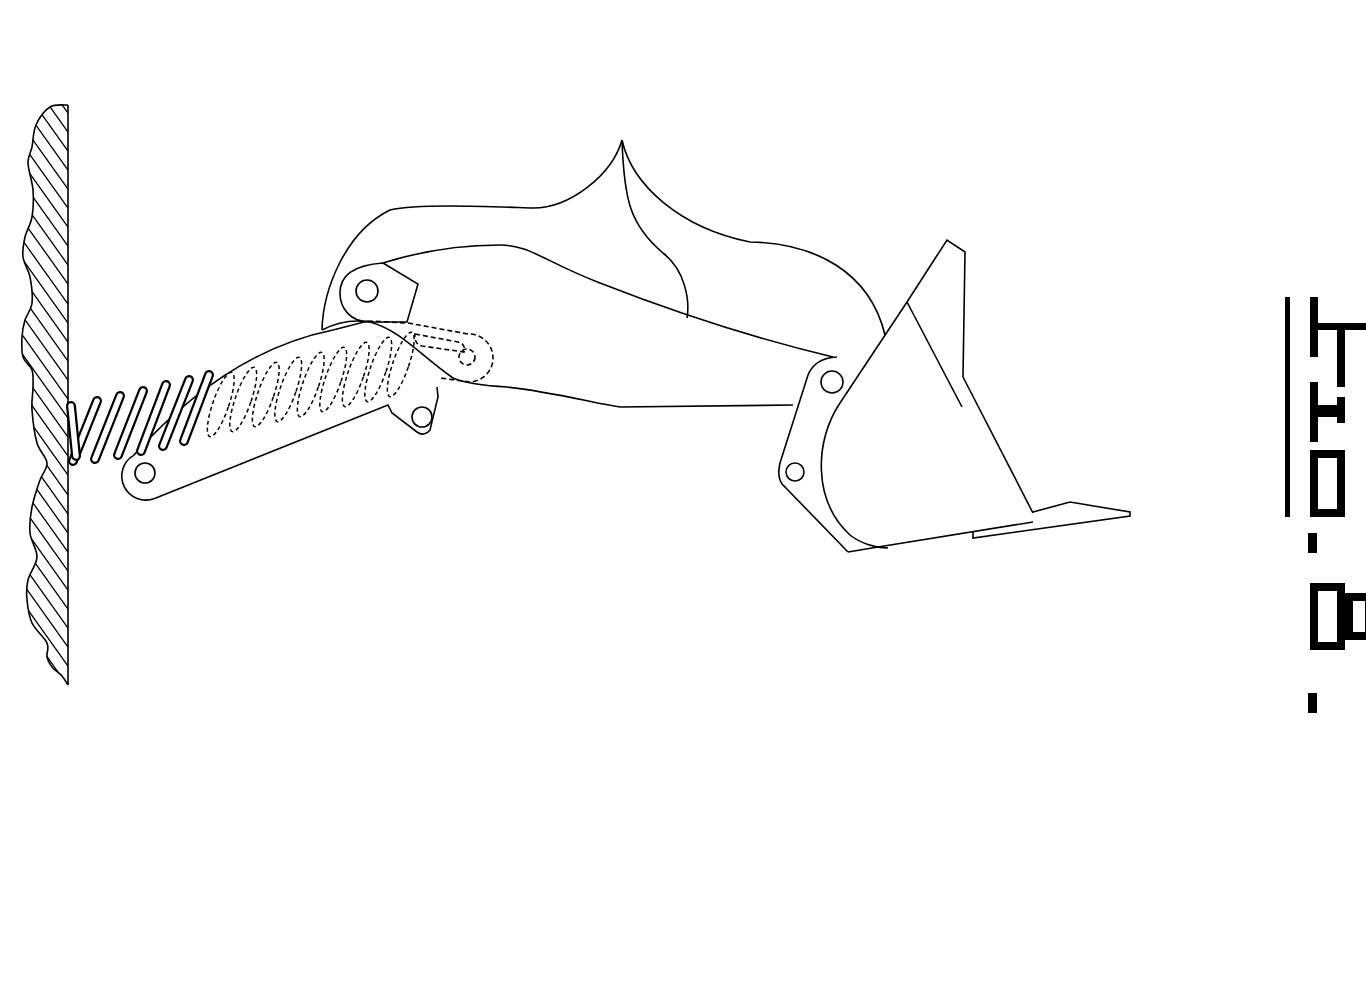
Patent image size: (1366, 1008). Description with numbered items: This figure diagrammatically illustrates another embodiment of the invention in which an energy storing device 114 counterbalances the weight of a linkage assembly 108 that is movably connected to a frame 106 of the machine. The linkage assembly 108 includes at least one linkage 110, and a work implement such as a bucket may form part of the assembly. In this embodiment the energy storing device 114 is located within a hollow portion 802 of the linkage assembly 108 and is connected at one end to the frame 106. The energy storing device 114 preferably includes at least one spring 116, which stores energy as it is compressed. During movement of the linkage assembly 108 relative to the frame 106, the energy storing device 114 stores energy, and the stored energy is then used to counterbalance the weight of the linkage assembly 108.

The frame 106 is at (42, 200).
The linkage assembly 108 is at (787, 143).
The linkage 110 is at (622, 140).
The energy storing device 114 is at (115, 381).
The spring 116 is at (93, 456).
The hollow portion 802 is at (292, 355).